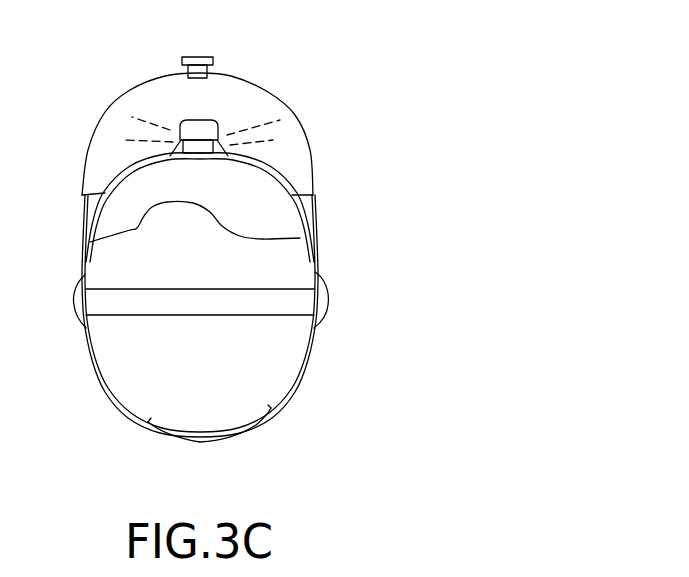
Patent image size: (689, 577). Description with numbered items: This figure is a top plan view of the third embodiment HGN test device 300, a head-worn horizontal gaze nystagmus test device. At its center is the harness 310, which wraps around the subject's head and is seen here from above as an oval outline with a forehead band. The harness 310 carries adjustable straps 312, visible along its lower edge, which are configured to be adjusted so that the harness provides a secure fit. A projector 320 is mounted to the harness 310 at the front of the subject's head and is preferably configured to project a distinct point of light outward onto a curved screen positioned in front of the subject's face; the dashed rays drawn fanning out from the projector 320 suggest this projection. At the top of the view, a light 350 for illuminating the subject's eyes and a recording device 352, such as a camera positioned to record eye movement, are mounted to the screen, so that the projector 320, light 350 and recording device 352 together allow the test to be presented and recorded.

The HGN test device 300 is at (386, 317).
The harness 310 is at (133, 109).
The adjustable straps 312 is at (207, 437).
The projector 320 is at (203, 143).
The light 350 is at (203, 73).
The recording device 352 is at (203, 61).